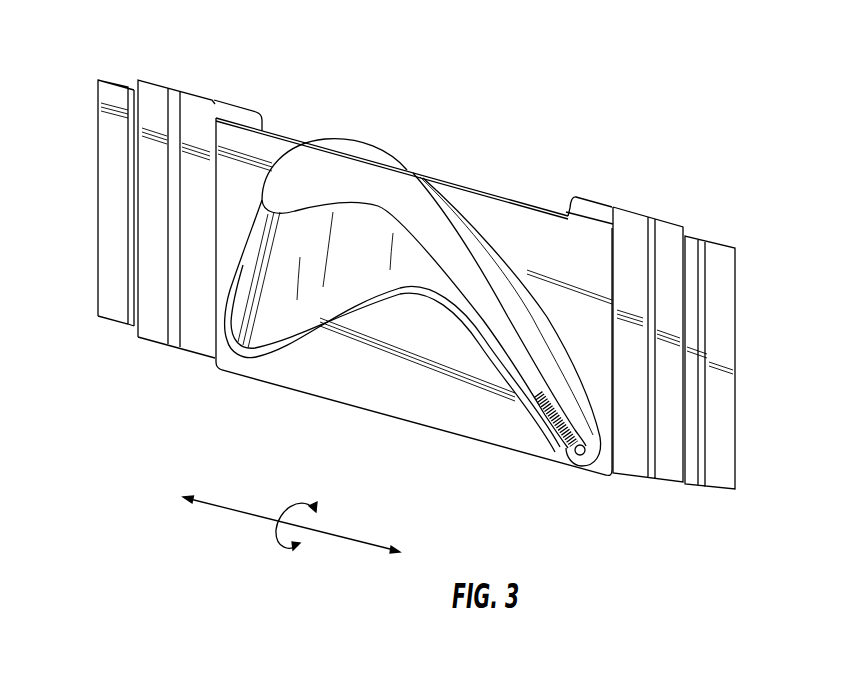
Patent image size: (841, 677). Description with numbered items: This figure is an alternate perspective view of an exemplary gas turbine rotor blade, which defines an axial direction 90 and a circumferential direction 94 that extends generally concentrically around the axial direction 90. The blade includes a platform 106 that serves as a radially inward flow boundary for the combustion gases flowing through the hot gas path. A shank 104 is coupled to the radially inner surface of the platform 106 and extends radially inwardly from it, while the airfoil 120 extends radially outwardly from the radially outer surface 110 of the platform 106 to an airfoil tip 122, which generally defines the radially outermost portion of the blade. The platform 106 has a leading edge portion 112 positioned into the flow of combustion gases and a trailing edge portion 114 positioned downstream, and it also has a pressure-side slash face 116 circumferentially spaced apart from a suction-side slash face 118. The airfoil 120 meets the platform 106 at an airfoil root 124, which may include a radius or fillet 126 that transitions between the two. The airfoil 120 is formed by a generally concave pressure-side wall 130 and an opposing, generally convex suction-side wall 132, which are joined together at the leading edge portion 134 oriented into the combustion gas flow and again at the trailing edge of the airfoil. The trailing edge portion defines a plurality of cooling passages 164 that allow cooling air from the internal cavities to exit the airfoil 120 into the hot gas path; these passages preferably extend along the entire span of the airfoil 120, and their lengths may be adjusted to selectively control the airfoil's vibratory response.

The axial direction 90 is at (218, 507).
The circumferential direction 94 is at (292, 505).
The shank 104 is at (150, 108).
The platform 106 is at (590, 232).
The radially outer surface 110 is at (540, 240).
The leading edge portion 112 is at (218, 248).
The trailing edge portion 114 is at (612, 290).
The pressure-side slash face 116 is at (498, 448).
The suction-side slash face 118 is at (268, 131).
The airfoil 120 is at (267, 380).
The airfoil tip 122 is at (358, 180).
The airfoil root 124 is at (348, 293).
The radius or fillet 126 is at (572, 388).
The pressure-side wall 130 is at (353, 272).
The suction-side wall 132 is at (463, 227).
The leading edge portion 134 is at (243, 268).
The cooling passages 164 is at (574, 460).